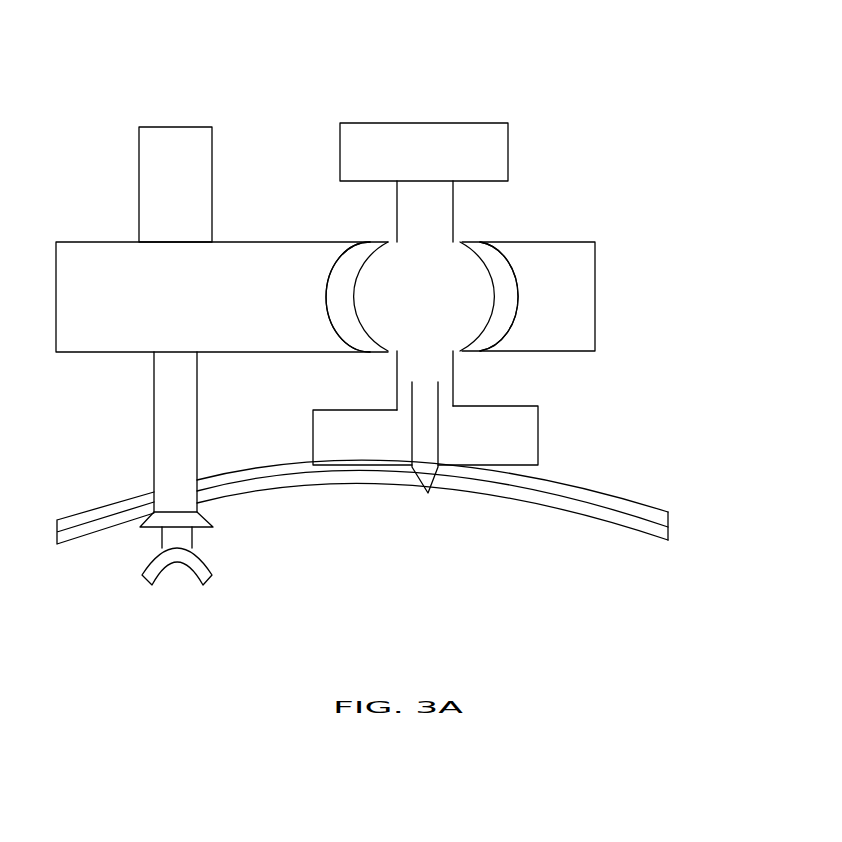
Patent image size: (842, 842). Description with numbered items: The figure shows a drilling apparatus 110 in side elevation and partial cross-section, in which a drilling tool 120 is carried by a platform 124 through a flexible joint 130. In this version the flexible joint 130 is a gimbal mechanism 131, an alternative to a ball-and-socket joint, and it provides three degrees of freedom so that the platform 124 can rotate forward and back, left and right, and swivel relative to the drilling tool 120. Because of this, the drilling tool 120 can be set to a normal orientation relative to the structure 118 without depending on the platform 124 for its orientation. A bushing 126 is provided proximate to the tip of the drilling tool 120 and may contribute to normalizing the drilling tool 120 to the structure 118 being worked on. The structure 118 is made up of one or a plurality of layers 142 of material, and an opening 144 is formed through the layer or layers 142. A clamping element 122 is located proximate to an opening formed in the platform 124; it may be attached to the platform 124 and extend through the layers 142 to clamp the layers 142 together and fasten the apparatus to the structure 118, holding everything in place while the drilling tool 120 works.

The drilling apparatus 110 is at (516, 67).
The structure 118 is at (672, 497).
The drilling tool 120 is at (425, 472).
The clamping element 122 is at (190, 563).
The platform 124 is at (75, 242).
The bushing 126 is at (538, 437).
The flexible joint 130 is at (388, 242).
The gimbal mechanism 131 is at (467, 242).
The layers 142 is at (78, 512).
The opening 144 is at (152, 490).